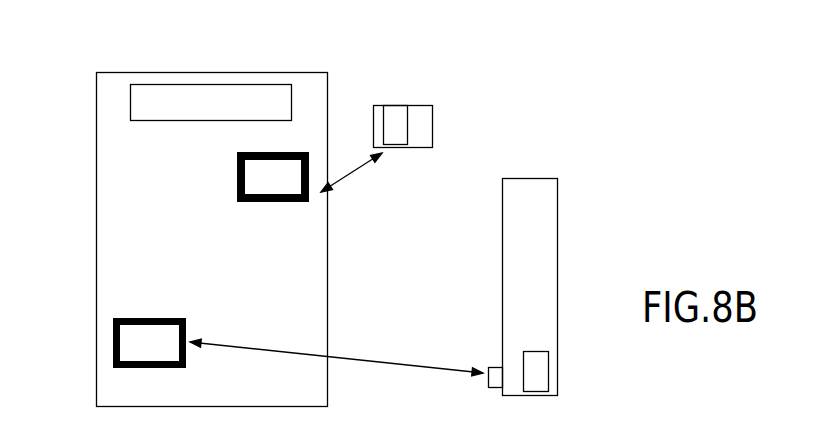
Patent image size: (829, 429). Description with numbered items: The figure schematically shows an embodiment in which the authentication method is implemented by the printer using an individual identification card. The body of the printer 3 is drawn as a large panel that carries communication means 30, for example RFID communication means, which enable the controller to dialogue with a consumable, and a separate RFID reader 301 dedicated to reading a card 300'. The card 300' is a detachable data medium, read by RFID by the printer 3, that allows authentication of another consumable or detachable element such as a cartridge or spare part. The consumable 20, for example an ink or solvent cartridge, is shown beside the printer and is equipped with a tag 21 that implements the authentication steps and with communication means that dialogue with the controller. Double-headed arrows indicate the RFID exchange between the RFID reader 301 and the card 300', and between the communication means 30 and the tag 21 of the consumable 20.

The body of the printer 3 is at (273, 72).
The communication means 30 is at (113, 335).
The RFID reader 301 is at (290, 202).
The authentication card 300' is at (444, 129).
The consumable 20 is at (539, 232).
The tag 21 is at (538, 371).